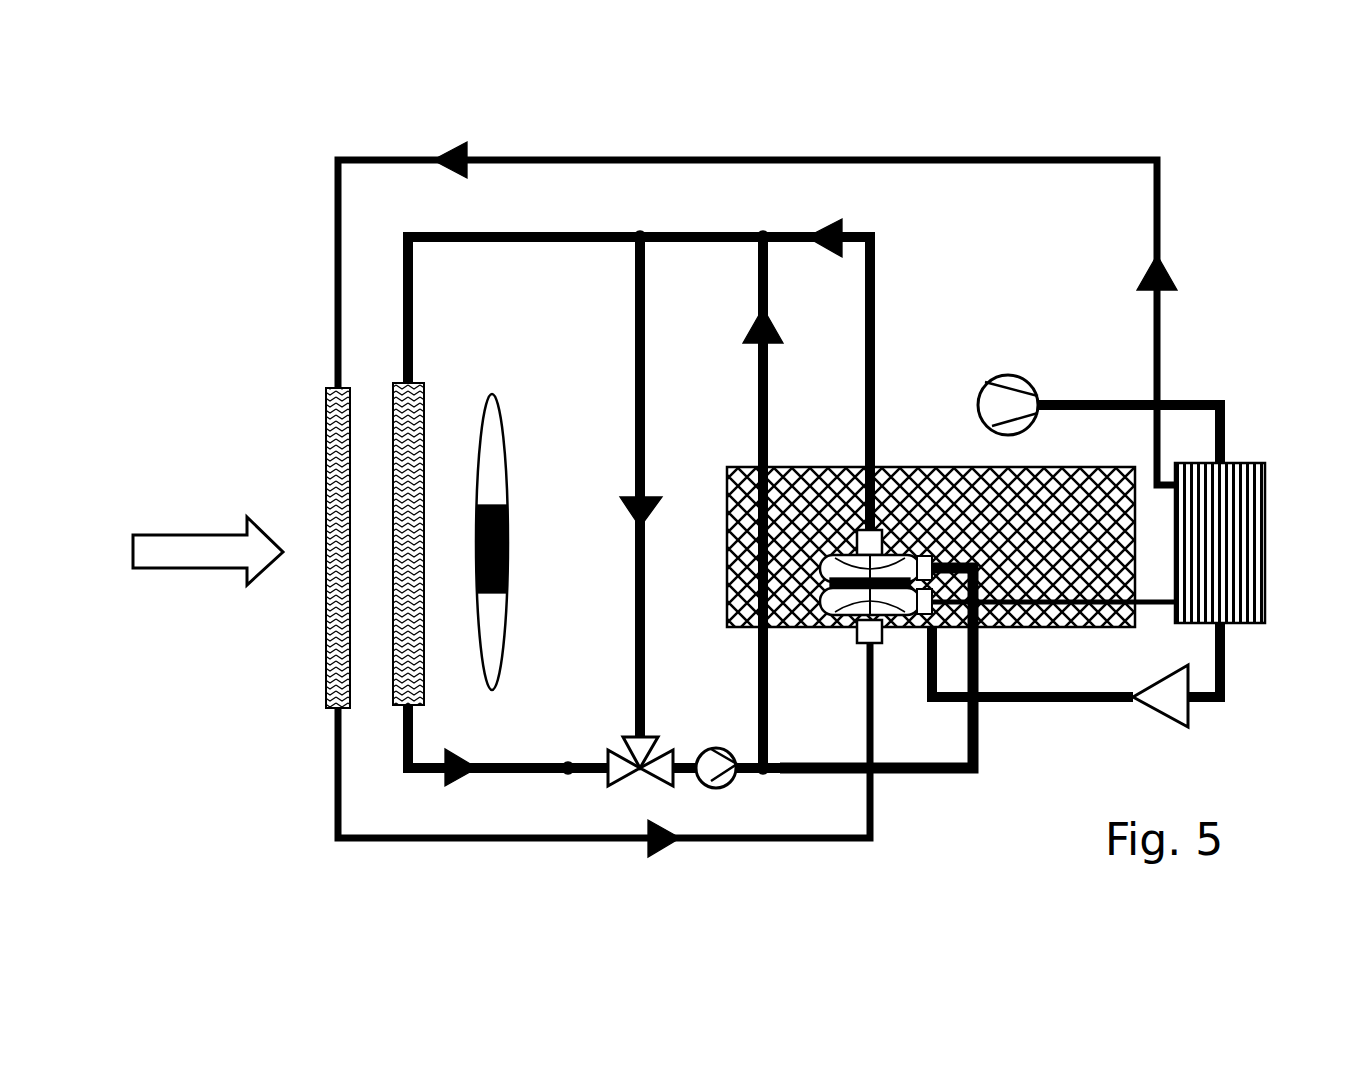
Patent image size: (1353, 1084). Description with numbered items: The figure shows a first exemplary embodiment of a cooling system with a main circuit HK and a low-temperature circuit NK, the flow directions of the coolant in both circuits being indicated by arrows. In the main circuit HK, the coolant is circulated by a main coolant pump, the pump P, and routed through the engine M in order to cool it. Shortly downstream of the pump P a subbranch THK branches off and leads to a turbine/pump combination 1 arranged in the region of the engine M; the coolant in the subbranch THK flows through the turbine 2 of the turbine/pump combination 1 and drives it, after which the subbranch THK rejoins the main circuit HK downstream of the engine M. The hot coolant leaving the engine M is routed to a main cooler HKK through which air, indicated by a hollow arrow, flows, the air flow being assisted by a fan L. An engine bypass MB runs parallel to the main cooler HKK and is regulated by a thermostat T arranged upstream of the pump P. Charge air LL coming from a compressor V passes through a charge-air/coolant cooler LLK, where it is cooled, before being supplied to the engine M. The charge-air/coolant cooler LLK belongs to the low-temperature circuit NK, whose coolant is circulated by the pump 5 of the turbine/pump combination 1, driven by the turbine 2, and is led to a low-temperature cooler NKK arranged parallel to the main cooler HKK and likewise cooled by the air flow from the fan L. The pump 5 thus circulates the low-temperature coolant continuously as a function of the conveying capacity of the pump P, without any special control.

The low-temperature circuit NK is at (548, 150).
The main circuit HK is at (722, 232).
The low-temperature cooler NKK is at (325, 460).
The main cooler HKK is at (393, 580).
The fan L is at (497, 430).
The engine bypass MB is at (640, 432).
The engine M is at (933, 495).
The compressor V is at (1000, 403).
The turbine 2 is at (842, 557).
The pump 5 is at (835, 602).
The turbine/pump combination 1 is at (909, 619).
The subbranch THK is at (918, 770).
The thermostat T is at (623, 776).
The pump P is at (718, 772).
The charge-air/coolant cooler LLK is at (1237, 600).
The charge air LL is at (1190, 705).